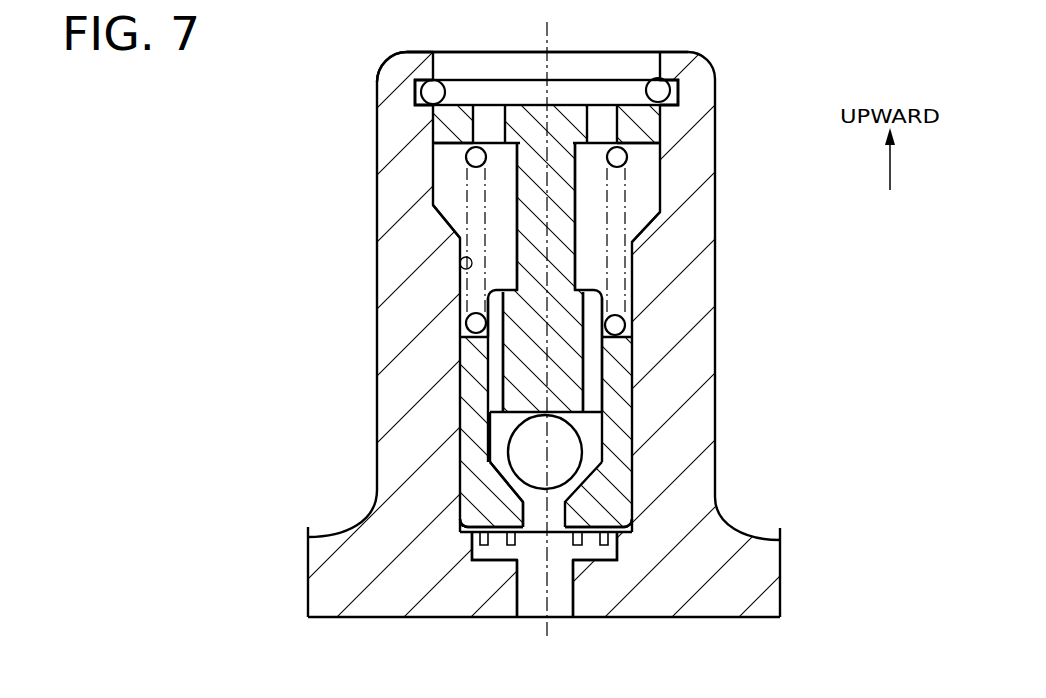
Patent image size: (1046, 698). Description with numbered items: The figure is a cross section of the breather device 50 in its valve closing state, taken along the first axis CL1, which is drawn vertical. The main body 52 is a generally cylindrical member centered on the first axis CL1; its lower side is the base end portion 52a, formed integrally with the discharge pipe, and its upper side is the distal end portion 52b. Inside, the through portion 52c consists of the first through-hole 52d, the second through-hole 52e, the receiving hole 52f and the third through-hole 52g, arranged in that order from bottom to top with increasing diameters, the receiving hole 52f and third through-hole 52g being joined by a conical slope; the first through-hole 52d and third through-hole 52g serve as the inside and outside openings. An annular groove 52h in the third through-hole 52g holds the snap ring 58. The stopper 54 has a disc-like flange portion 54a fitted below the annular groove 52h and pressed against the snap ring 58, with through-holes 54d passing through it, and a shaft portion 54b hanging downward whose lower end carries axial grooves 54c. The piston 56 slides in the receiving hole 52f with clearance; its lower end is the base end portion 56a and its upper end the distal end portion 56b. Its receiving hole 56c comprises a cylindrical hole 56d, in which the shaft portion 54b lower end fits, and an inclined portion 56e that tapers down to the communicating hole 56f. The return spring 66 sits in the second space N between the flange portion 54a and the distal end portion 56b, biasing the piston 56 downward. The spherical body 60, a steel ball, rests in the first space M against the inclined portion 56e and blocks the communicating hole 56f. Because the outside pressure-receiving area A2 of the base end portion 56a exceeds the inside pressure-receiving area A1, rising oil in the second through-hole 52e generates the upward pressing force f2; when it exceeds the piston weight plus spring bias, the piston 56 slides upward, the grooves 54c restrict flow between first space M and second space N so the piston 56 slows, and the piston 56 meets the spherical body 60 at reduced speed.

The breather device 50 is at (305, 297).
The main body 52 is at (697, 185).
The base end portion 52a is at (772, 618).
The distal end portion 52b is at (672, 52).
The through portion 52c is at (437, 178).
The first through-hole 52d is at (518, 612).
The second through-hole 52e is at (487, 560).
The receiving hole 52f is at (457, 240).
The third through-hole 52g is at (445, 52).
The annular groove 52h is at (678, 82).
The stopper 54 is at (587, 228).
The flange portion 54a is at (637, 118).
The shaft portion 54b is at (572, 355).
The grooves 54c is at (607, 297).
The through-holes 54d is at (486, 140).
The piston 56 is at (473, 392).
The base end portion 56a is at (620, 535).
The distal end portion 56b is at (472, 335).
The receiving hole 56c is at (592, 383).
The cylindrical hole 56d is at (490, 416).
The inclined portion 56e is at (488, 468).
The communicating hole 56f is at (458, 502).
The snap ring 58 is at (428, 88).
The spherical body 60 is at (632, 500).
The return spring 66 is at (466, 150).
The first axis CL1 is at (546, 320).
The second space N is at (602, 207).
The first space M is at (612, 400).
The inside pressure-receiving area A1 is at (603, 425).
The outside pressure-receiving area A2 is at (598, 550).
The pressing force f2 is at (559, 553).